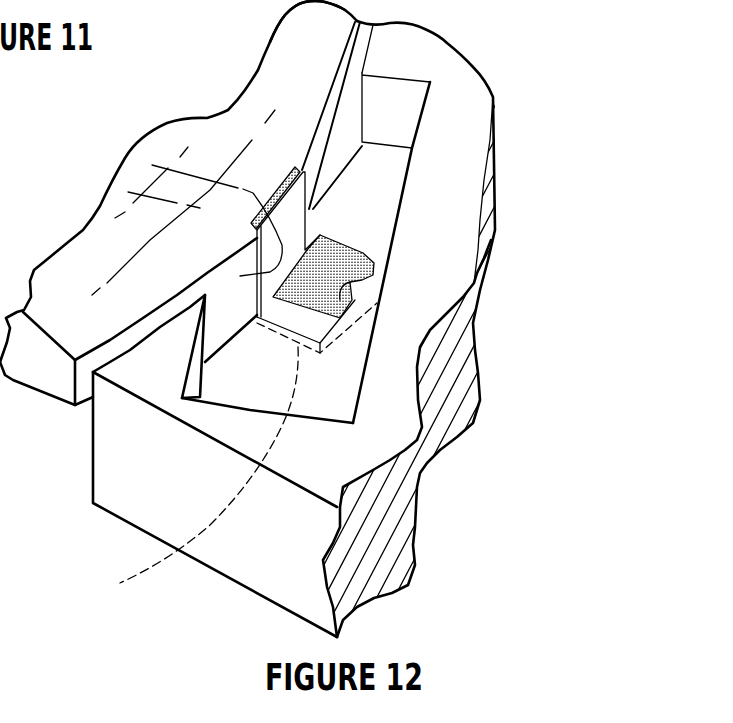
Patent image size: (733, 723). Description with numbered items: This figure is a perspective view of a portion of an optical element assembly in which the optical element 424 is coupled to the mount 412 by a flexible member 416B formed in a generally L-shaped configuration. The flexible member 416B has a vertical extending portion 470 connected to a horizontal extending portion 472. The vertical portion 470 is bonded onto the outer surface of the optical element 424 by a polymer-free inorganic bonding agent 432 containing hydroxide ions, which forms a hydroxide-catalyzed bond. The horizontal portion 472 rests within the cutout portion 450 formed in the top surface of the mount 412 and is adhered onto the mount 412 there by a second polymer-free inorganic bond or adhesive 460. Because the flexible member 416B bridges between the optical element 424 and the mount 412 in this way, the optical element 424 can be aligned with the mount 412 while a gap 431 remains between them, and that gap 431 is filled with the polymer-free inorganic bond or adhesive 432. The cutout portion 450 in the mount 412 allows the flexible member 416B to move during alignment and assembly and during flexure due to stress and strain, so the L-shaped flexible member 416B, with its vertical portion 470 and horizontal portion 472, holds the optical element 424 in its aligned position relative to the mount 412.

The mount 412 is at (478, 83).
The flexible member 416B is at (320, 206).
The optical element 424 is at (290, 43).
The gap 431 is at (292, 172).
The polymer-free inorganic bonding agent 432 is at (283, 180).
The cutout portion 450 is at (372, 224).
The second polymer-free inorganic bond or adhesive 460 is at (372, 262).
The vertical extending portion 470 is at (240, 276).
The horizontal extending portion 472 is at (190, 473).